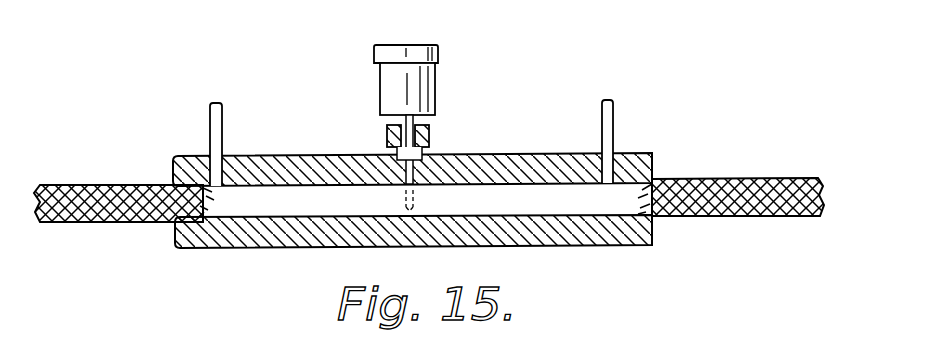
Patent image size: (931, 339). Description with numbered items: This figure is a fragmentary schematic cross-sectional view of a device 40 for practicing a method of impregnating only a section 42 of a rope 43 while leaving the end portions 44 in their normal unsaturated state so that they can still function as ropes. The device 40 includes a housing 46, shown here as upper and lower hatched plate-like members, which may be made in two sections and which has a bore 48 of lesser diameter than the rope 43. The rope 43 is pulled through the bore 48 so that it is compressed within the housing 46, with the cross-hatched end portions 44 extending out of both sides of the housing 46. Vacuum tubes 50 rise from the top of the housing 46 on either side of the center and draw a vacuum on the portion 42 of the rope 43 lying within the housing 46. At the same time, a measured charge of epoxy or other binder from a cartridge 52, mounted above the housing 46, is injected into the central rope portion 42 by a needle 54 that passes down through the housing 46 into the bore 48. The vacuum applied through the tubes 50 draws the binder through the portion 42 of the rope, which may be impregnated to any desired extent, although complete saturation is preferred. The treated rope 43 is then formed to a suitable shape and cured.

The device 40 is at (675, 118).
The section of rope 42 is at (535, 195).
The rope 43 is at (747, 178).
The end portions 44 is at (90, 223).
The housing 46 is at (588, 245).
The bore 48 is at (275, 192).
The vacuum tubes 50 is at (222, 108).
The cartridge 52 is at (433, 80).
The needle 54 is at (357, 163).